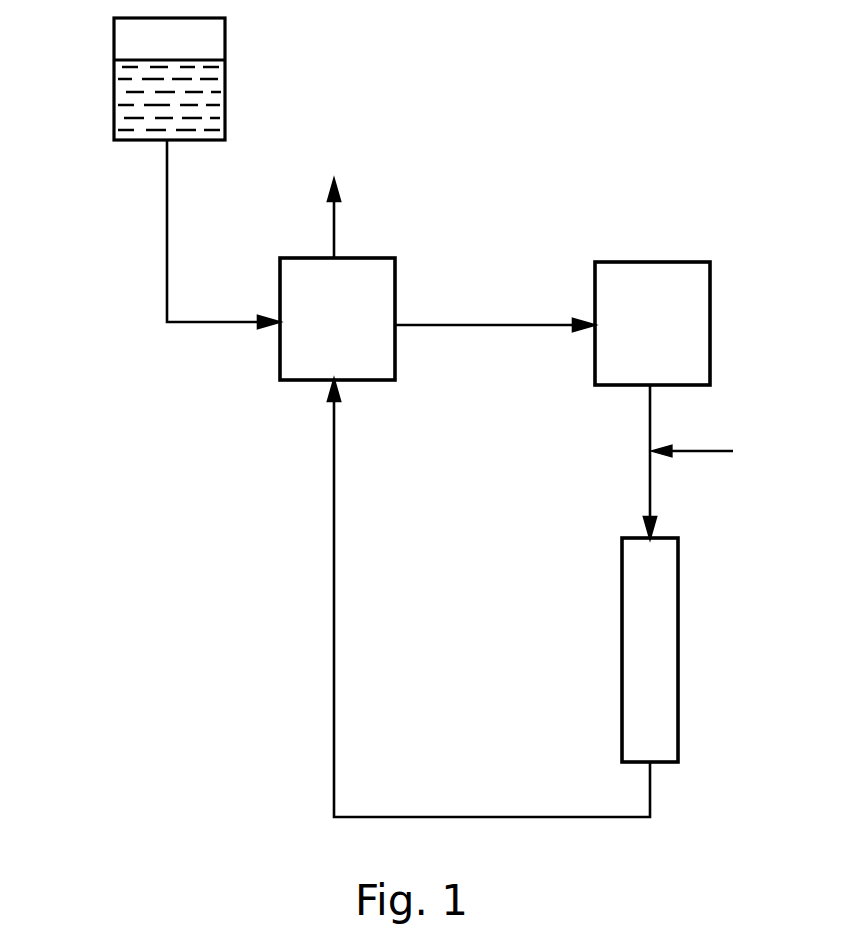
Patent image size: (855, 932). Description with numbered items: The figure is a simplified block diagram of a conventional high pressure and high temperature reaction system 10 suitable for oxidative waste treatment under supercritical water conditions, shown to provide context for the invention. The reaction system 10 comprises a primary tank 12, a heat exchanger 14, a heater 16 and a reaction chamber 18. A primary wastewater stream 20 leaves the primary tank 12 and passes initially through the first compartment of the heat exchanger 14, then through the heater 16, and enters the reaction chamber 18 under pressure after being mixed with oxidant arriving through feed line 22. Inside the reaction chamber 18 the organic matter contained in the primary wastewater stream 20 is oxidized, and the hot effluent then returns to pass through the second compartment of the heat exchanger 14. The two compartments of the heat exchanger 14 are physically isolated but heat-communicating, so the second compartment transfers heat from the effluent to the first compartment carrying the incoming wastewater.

The reaction system 10 is at (594, 163).
The primary tank 12 is at (208, 45).
The heat exchanger 14 is at (387, 282).
The heater 16 is at (697, 347).
The reaction chamber 18 is at (665, 668).
The primary wastewater stream 20 is at (138, 116).
The feed line 22 is at (707, 455).